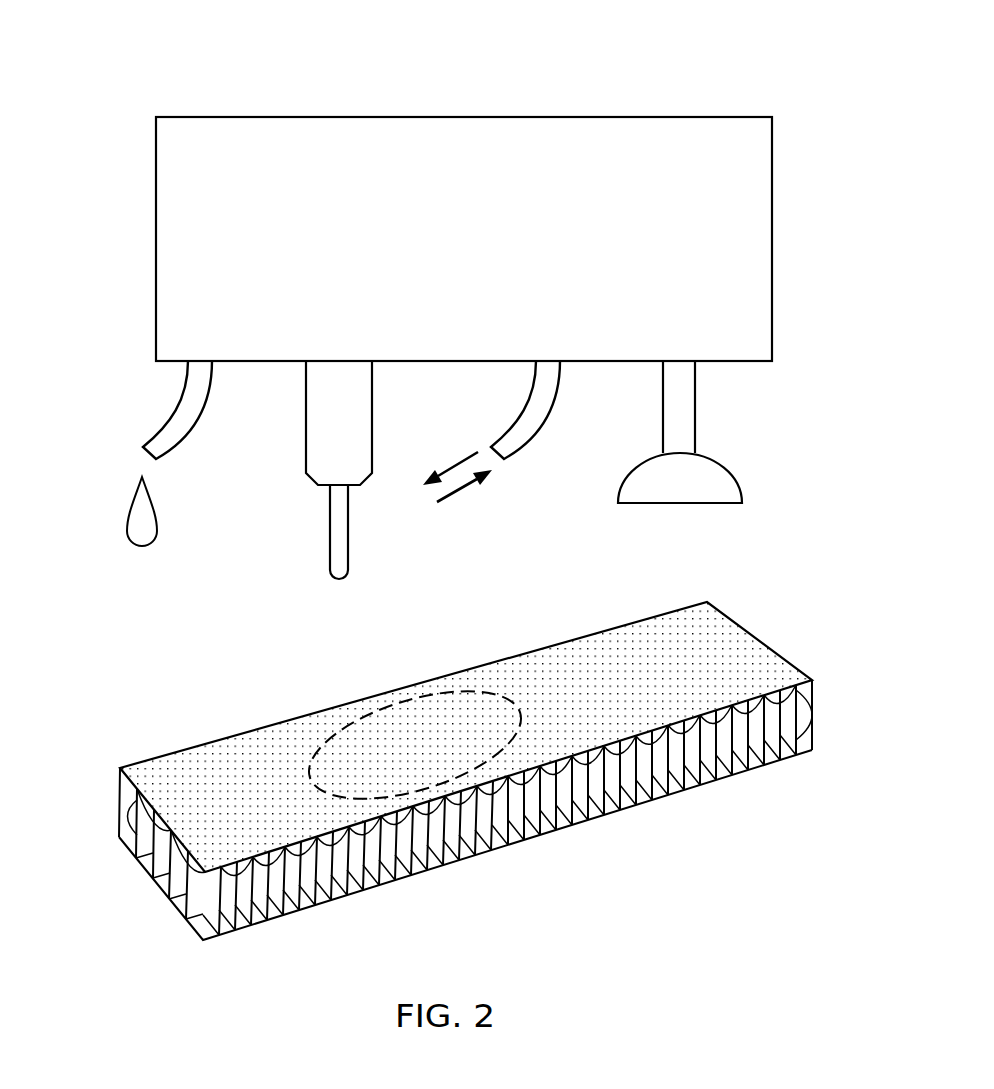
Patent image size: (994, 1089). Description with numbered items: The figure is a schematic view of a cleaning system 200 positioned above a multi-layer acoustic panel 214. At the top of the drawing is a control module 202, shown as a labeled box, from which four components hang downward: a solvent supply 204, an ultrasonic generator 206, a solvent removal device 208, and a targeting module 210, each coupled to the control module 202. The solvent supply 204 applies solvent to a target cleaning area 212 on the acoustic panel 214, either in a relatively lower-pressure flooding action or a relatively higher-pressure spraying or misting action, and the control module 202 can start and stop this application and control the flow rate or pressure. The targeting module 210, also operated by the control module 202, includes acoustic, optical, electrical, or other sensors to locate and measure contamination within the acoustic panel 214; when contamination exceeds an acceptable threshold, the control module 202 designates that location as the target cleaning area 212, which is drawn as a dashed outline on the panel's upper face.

The cleaning system 200 is at (182, 46).
The control module 202 is at (620, 116).
The solvent supply 204 is at (168, 420).
The ultrasonic generator 206 is at (306, 425).
The solvent removal device 208 is at (512, 428).
The targeting module 210 is at (653, 455).
The target cleaning area 212 is at (345, 728).
The acoustic panel 214 is at (187, 747).